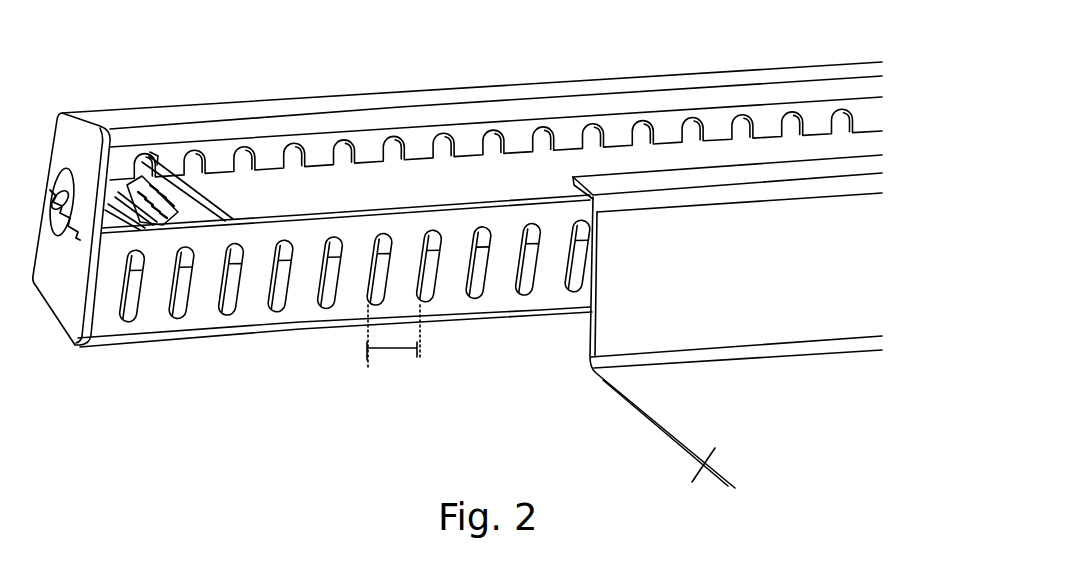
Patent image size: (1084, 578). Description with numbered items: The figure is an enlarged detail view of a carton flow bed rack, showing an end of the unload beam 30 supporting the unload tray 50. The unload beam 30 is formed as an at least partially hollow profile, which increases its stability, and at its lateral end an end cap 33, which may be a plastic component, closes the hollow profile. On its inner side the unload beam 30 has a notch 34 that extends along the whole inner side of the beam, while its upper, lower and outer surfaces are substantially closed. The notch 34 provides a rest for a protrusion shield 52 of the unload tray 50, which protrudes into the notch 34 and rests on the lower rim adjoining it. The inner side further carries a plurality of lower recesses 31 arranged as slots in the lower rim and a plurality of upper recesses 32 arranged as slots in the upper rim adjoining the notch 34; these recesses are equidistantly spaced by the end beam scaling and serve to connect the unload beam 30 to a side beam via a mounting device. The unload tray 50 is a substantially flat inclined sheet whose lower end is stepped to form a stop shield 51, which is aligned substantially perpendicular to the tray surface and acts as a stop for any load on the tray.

The unload beam 30 is at (472, 214).
The lower recesses 31 is at (232, 260).
The upper recesses 32 is at (247, 157).
The end cap 33 is at (55, 298).
The notch 34 is at (518, 177).
The unload tray 50 is at (697, 342).
The stop shield 51 is at (603, 330).
The protrusion shield 52 is at (637, 182).